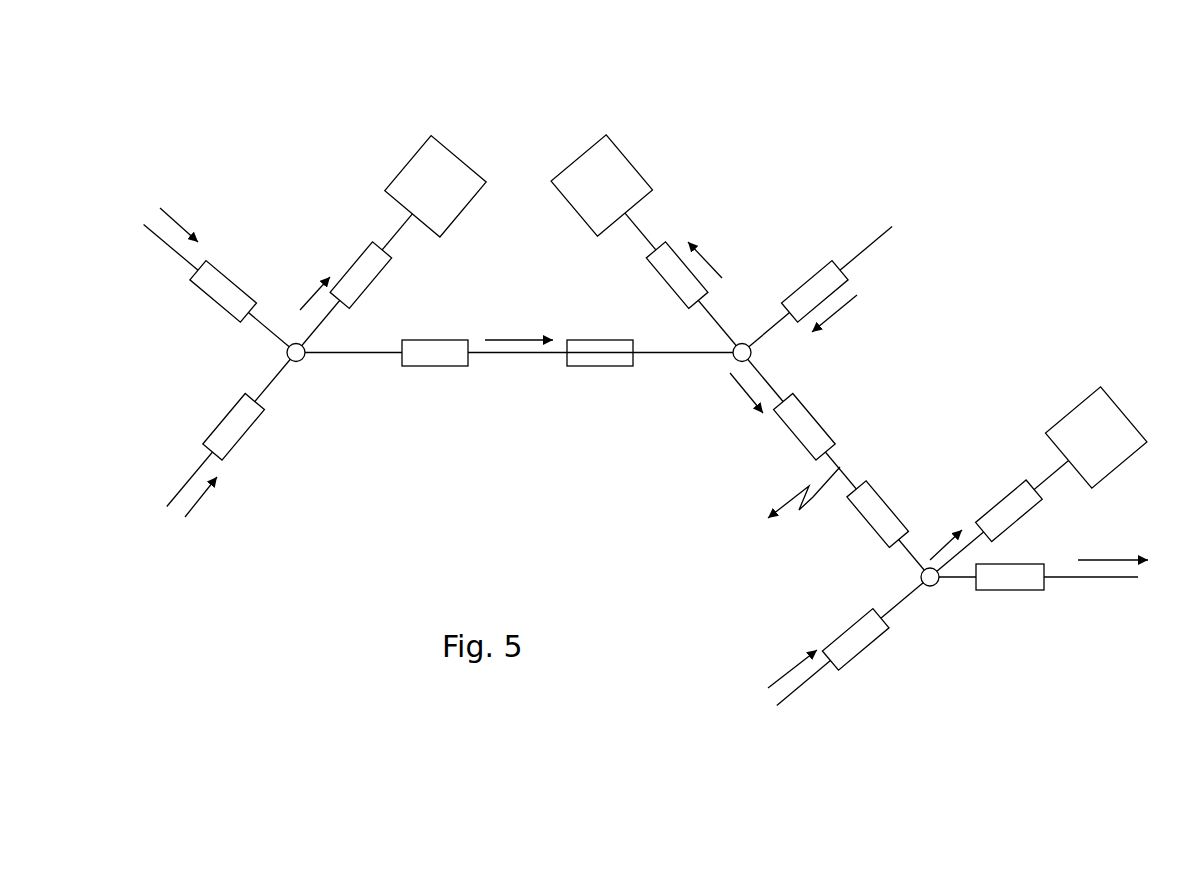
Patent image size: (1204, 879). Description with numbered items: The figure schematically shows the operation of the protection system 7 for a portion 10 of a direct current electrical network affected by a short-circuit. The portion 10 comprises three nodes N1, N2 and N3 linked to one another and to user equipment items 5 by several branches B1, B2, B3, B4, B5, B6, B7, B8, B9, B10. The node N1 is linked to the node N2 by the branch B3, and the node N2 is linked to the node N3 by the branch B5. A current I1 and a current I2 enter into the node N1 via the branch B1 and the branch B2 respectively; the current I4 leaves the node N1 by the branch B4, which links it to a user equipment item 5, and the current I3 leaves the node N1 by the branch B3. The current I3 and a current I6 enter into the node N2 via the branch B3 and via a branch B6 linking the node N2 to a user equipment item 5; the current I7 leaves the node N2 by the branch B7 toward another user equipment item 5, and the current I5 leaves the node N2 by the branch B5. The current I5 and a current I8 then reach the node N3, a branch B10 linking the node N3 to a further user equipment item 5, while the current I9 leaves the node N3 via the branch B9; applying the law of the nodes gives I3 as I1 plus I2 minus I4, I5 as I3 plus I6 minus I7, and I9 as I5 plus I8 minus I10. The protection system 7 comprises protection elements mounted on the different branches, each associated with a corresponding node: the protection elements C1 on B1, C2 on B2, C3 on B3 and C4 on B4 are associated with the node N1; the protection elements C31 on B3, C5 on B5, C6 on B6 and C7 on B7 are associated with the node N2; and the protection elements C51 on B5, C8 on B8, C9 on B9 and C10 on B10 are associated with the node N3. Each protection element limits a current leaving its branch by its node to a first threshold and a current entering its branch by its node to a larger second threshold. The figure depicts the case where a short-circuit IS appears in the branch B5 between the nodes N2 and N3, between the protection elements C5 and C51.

The portion of a direct current electrical network 10 is at (758, 125).
The protection system 7 is at (422, 482).
The user equipment item 5 is at (443, 167).
The node N1 is at (303, 361).
The node N2 is at (751, 354).
The node N3 is at (937, 587).
The protection element C1 is at (222, 280).
The protection element C2 is at (242, 432).
The protection element C3 is at (435, 355).
The protection element C31 is at (600, 358).
The protection element C4 is at (358, 265).
The protection element C5 is at (798, 430).
The protection element C51 is at (887, 498).
The protection element C6 is at (815, 282).
The protection element C7 is at (660, 283).
The protection element C8 is at (867, 638).
The protection element C9 is at (1020, 590).
The protection element C10 is at (998, 517).
The branch B1 is at (258, 325).
The branch B2 is at (275, 377).
The branch B3 is at (517, 355).
The branch B4 is at (400, 232).
The branch B5 is at (852, 460).
The branch B6 is at (872, 243).
The branch B7 is at (640, 228).
The branch B8 is at (822, 670).
The branch B9 is at (1115, 578).
The branch B10 is at (1043, 475).
The current I1 is at (180, 216).
The current I2 is at (207, 510).
The current I3 is at (519, 319).
The current I4 is at (309, 281).
The current I5 is at (733, 393).
The current I6 is at (843, 325).
The current I7 is at (717, 258).
The current I8 is at (792, 655).
The current I9 is at (1113, 542).
The current I10 is at (940, 530).
The short-circuit IS is at (790, 515).